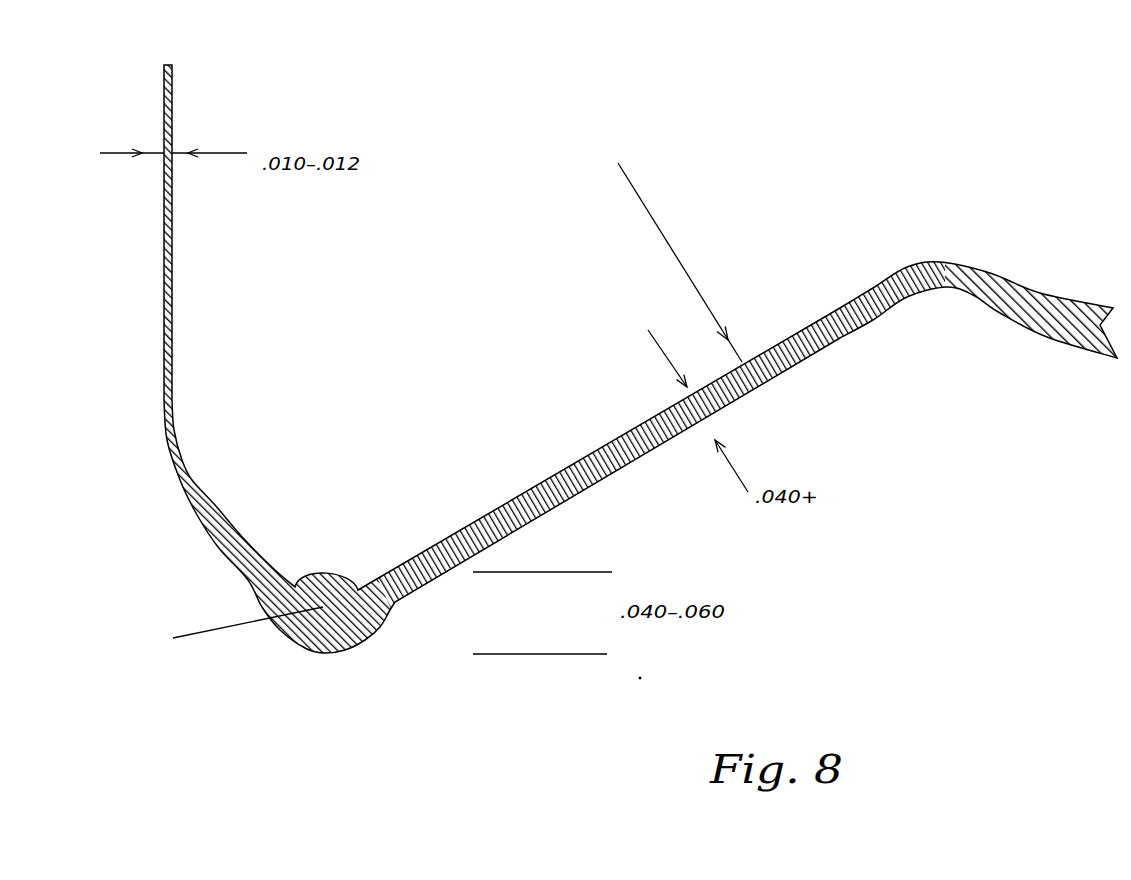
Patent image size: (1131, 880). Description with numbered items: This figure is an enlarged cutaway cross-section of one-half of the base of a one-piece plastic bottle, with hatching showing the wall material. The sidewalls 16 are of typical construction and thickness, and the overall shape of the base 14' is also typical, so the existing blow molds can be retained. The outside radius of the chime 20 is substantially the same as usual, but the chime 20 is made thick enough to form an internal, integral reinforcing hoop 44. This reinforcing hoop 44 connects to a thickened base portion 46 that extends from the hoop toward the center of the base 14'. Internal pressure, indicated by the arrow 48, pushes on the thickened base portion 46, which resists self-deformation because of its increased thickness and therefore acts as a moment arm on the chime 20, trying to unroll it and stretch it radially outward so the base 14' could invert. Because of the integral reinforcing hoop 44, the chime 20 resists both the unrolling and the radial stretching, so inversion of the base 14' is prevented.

The base 14' is at (647, 359).
The sidewalls 16 is at (172, 296).
The chime 20 is at (323, 655).
The reinforcing hoop 44 is at (233, 628).
The thickened base portion 46 is at (625, 435).
The arrow 48 is at (688, 283).